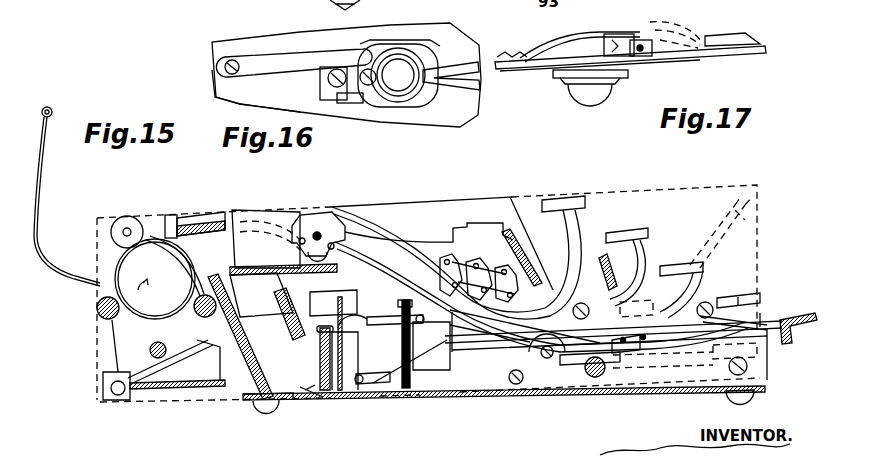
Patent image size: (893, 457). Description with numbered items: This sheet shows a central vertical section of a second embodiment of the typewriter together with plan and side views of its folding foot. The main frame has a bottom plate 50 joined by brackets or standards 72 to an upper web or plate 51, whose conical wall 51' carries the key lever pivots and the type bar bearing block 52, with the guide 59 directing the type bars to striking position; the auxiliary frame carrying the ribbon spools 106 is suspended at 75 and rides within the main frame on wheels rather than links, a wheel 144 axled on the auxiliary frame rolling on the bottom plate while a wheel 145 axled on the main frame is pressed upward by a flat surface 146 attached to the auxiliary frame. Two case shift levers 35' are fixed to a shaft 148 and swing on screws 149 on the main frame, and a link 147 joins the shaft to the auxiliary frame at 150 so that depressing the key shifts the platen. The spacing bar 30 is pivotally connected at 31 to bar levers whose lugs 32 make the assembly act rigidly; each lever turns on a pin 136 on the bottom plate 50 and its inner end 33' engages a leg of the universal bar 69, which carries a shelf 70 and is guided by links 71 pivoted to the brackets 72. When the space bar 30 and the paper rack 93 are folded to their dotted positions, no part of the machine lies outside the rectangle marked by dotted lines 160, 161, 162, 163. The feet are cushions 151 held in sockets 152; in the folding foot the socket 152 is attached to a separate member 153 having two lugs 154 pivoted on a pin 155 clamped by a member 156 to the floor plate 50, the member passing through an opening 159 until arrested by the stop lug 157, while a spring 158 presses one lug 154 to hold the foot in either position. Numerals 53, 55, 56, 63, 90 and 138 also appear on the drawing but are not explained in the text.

In FIG. 15, the spacing bar 30 is at (745, 215).
In FIG. 15, the pivotal connection 31 is at (643, 337).
In FIG. 15, the lugs 32 is at (623, 340).
In FIG. 15, the inner end of lever 33' is at (570, 346).
In FIG. 15, the case shift levers 35' is at (581, 352).
In FIG. 16, the bottom plate 50 is at (256, 91).
In FIG. 17, the bottom plate 50 is at (745, 55).
In FIG. 15, the web or plate 51 is at (543, 243).
In FIG. 15, the wall 51' is at (479, 275).
In FIG. 15, the type bar bearing block 52 is at (283, 242).
In FIG. 15, the pivot body 53 is at (314, 232).
In FIG. 15, the bearing 55 is at (156, 333).
In FIG. 15, the wheel 56 is at (155, 279).
In FIG. 15, the guide 59 is at (208, 232).
In FIG. 15, the arrow 63 is at (143, 294).
In FIG. 15, the universal bar 69 is at (398, 318).
In FIG. 15, the shelf 70 is at (335, 396).
In FIG. 15, the links 71 is at (364, 349).
In FIG. 15, the brackets or standards 72 is at (424, 344).
In FIG. 16, the pivot 75 is at (270, 7).
In FIG. 15, the stud 90 is at (150, 354).
In FIG. 15, the paper rack 93 is at (42, 186).
In FIG. 15, the ribbon spools 106 is at (539, 274).
In FIG. 15, the pin 136 is at (415, 408).
In FIG. 15, the screw 138 is at (709, 301).
In FIG. 15, the wheel 144 is at (260, 412).
In FIG. 15, the wheel 145 is at (547, 362).
In FIG. 15, the flat surface 146 is at (590, 375).
In FIG. 15, the link 147 is at (570, 368).
In FIG. 15, the shaft 148 is at (606, 375).
In FIG. 15, the screws 149 is at (586, 304).
In FIG. 15, the connection to auxiliary frame 150 is at (510, 383).
In FIG. 16, the cushions 151 is at (398, 75).
In FIG. 17, the cushions 151 is at (600, 90).
In FIG. 15, the cushions 151 is at (252, 423).
In FIG. 16, the sockets 152 is at (415, 99).
In FIG. 17, the sockets 152 is at (575, 84).
In FIG. 15, the sockets 152 is at (280, 410).
In FIG. 16, the separate member 153 is at (405, 107).
In FIG. 17, the separate member 153 is at (560, 68).
In FIG. 16, the lugs 154 is at (357, 100).
In FIG. 17, the lugs 154 is at (645, 50).
In FIG. 16, the pin 155 is at (356, 103).
In FIG. 17, the pin 155 is at (641, 52).
In FIG. 16, the clamping member 156 is at (338, 92).
In FIG. 17, the clamping member 156 is at (605, 40).
In FIG. 16, the stop lug 157 is at (451, 76).
In FIG. 17, the stop lug 157 is at (735, 30).
In FIG. 16, the spring 158 is at (294, 63).
In FIG. 17, the spring 158 is at (572, 36).
In FIG. 16, the opening 159 is at (440, 100).
In FIG. 15, the dotted line 160 is at (194, 303).
In FIG. 15, the dotted line 161 is at (653, 252).
In FIG. 15, the dotted line 162 is at (768, 388).
In FIG. 15, the dotted line 163 is at (410, 410).